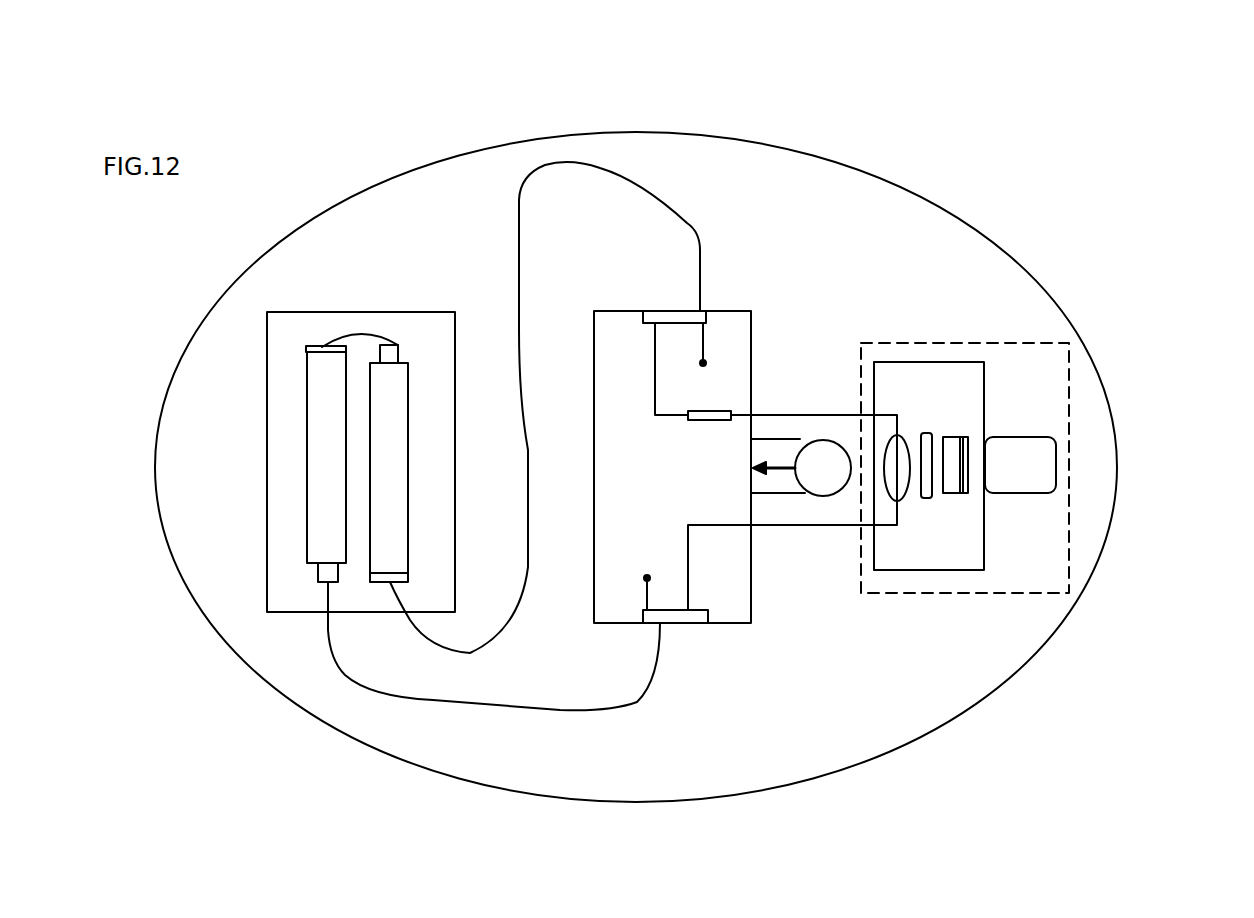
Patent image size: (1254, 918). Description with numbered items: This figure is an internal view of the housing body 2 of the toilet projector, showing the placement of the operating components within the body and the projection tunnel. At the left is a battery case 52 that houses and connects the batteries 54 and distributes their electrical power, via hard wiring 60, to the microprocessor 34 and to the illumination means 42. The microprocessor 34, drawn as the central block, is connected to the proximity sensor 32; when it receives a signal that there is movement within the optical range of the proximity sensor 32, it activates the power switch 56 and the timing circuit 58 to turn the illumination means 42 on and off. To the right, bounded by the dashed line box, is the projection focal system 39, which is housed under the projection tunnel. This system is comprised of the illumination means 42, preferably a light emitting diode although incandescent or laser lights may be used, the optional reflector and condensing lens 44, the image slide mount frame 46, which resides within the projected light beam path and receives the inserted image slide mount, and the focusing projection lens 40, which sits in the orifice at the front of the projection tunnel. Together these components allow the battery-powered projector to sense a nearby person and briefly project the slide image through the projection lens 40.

The housing body 2 is at (430, 167).
The proximity sensor 32 is at (818, 458).
The microprocessor 34 is at (730, 612).
The projection focal system 39 is at (993, 333).
The projection lens 40 is at (1042, 458).
The illumination means 42 is at (890, 478).
The reflector and condensing lens 44 is at (926, 430).
The image slide mount frame 46 is at (965, 493).
The battery case 52 is at (305, 312).
The batteries 54 is at (323, 448).
The power switch 56 is at (695, 421).
The timing circuit 58 is at (725, 411).
The hard wiring 60 is at (557, 158).